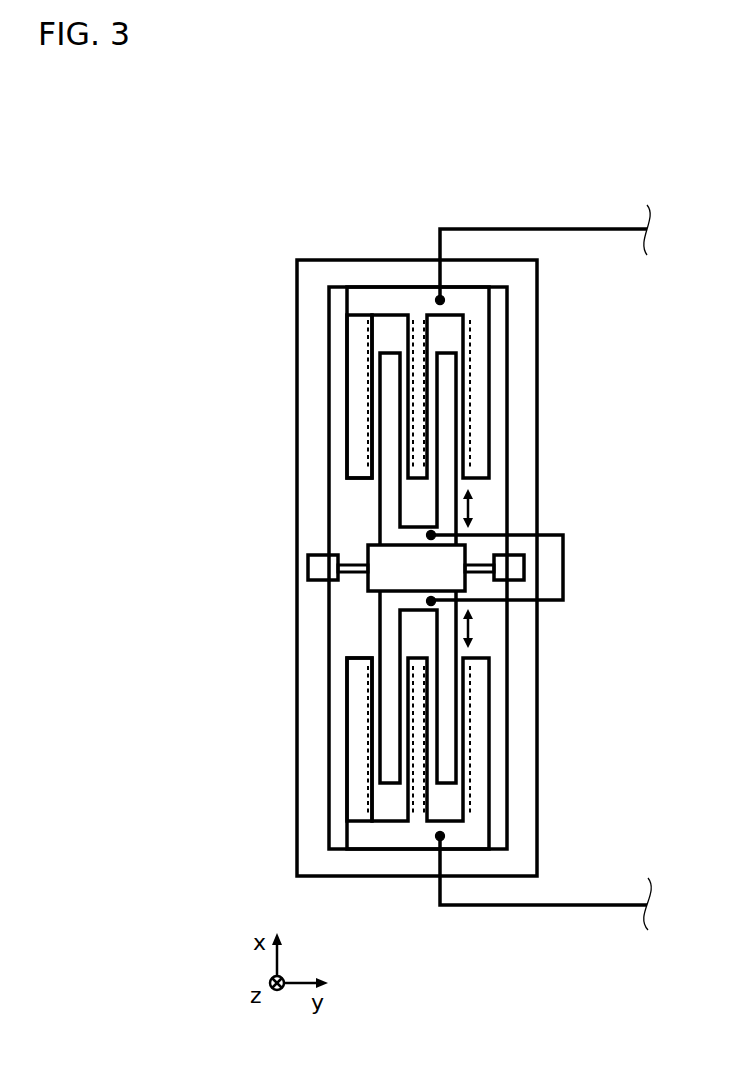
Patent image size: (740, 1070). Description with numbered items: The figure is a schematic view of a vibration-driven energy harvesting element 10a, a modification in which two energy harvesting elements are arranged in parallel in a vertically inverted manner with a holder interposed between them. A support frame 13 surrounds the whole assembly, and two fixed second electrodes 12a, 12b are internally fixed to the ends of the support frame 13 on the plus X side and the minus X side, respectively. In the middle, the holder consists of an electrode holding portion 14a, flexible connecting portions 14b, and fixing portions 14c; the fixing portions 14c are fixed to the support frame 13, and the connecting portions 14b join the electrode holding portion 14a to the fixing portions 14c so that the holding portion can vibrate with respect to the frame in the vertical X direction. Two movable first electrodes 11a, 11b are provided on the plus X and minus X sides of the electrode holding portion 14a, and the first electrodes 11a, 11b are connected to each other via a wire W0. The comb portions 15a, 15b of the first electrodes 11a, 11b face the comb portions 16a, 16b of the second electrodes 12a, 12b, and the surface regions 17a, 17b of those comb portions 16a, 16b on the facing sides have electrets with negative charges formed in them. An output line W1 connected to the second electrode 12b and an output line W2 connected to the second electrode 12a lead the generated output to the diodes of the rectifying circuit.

The vibration-driven energy harvesting element 10a is at (279, 196).
The first electrode 11a is at (390, 530).
The first electrode 11b is at (390, 610).
The second electrode 12a is at (407, 298).
The second electrode 12b is at (380, 837).
The support frame 13 is at (310, 435).
The electrode holding portion 14a is at (380, 560).
The connecting portions 14b is at (353, 573).
The fixing portions 14c is at (315, 567).
The comb portion 15a is at (390, 478).
The comb portion 15b is at (390, 650).
The comb portion 16a is at (357, 395).
The comb portion 16b is at (357, 743).
The surface region 17a is at (367, 340).
The surface region 17b is at (367, 798).
The wire W0 is at (565, 545).
The output line W1 is at (563, 905).
The output line W2 is at (564, 227).